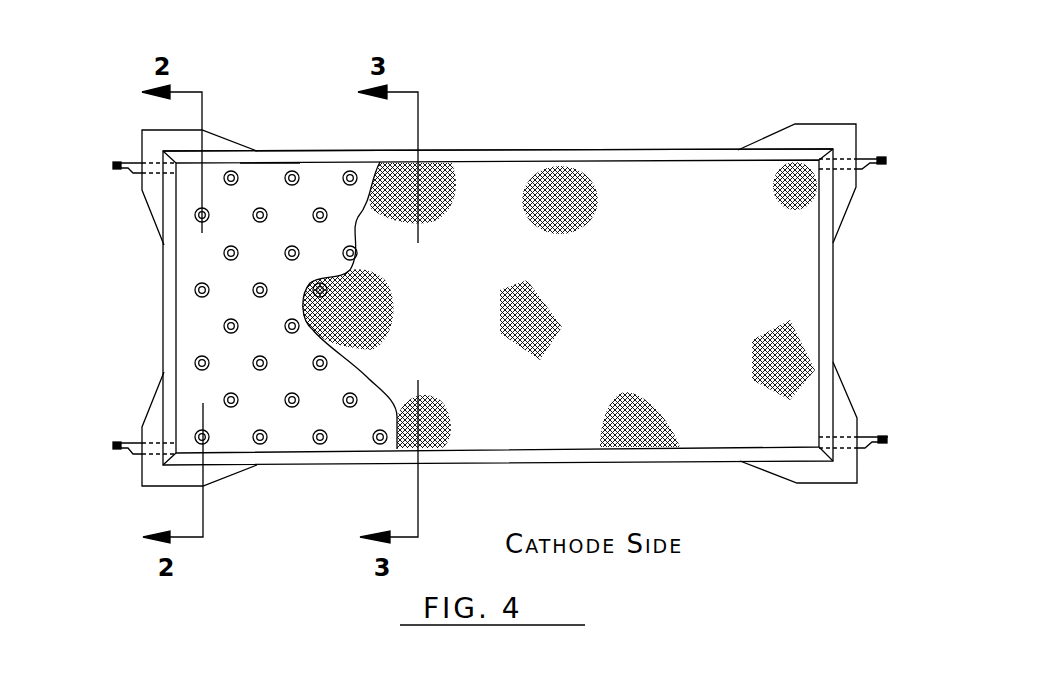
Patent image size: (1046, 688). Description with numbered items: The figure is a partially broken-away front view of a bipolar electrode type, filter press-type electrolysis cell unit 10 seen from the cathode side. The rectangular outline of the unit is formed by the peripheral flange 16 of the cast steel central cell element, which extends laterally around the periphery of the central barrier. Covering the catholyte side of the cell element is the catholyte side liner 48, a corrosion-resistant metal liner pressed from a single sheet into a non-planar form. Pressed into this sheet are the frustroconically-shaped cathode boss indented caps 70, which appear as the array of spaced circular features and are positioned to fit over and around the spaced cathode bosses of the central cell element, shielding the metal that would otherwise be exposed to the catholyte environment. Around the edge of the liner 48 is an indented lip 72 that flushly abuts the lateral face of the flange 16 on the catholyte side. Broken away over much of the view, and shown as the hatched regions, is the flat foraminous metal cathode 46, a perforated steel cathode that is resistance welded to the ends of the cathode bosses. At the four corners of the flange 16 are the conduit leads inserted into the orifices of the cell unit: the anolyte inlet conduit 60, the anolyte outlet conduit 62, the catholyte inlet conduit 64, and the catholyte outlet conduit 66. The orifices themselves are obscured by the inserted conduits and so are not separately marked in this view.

The filter press-type cell unit 10 is at (516, 58).
The peripheral flange 16 is at (154, 222).
The flat foraminous metal cathode 46 is at (648, 202).
The catholyte side liner 48 is at (322, 184).
The anolyte inlet conduit 60 is at (920, 406).
The anolyte outlet conduit 62 is at (113, 165).
The catholyte inlet conduit 64 is at (113, 446).
The catholyte outlet conduit 66 is at (888, 160).
The cathode boss indented caps 70 is at (343, 403).
The indented lip 72 is at (272, 161).